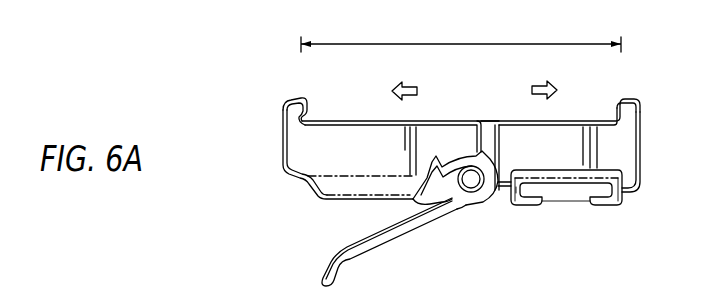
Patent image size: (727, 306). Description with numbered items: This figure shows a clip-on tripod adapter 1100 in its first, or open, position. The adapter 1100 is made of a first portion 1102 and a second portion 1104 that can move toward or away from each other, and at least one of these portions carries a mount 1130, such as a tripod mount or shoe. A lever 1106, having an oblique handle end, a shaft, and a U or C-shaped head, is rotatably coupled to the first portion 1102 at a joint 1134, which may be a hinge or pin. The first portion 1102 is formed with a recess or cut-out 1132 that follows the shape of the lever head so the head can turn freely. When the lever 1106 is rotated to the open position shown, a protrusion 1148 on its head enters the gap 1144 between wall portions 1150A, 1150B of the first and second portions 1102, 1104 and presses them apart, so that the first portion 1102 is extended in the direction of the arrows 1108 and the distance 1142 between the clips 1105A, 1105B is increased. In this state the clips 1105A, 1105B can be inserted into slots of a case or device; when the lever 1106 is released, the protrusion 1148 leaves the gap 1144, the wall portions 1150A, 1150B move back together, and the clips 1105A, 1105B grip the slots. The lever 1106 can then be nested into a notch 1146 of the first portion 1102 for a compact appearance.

The tripod adapter 1100 is at (240, 171).
The first portion 1102 is at (353, 118).
The second portion 1104 is at (581, 117).
The clip 1105A is at (302, 100).
The clip 1105B is at (621, 100).
The lever 1106 is at (377, 242).
The arrows 1108 is at (538, 78).
The mount 1130 is at (572, 197).
The recess or cut-out 1132 is at (455, 157).
The joint 1134 is at (471, 172).
The distance between clips 1142 is at (463, 43).
The gap 1144 is at (490, 115).
The notch or recess or cut-out 1146 is at (303, 195).
The protrusion 1148 is at (499, 195).
The wall portion 1150A is at (485, 114).
The wall portion 1150B is at (493, 124).